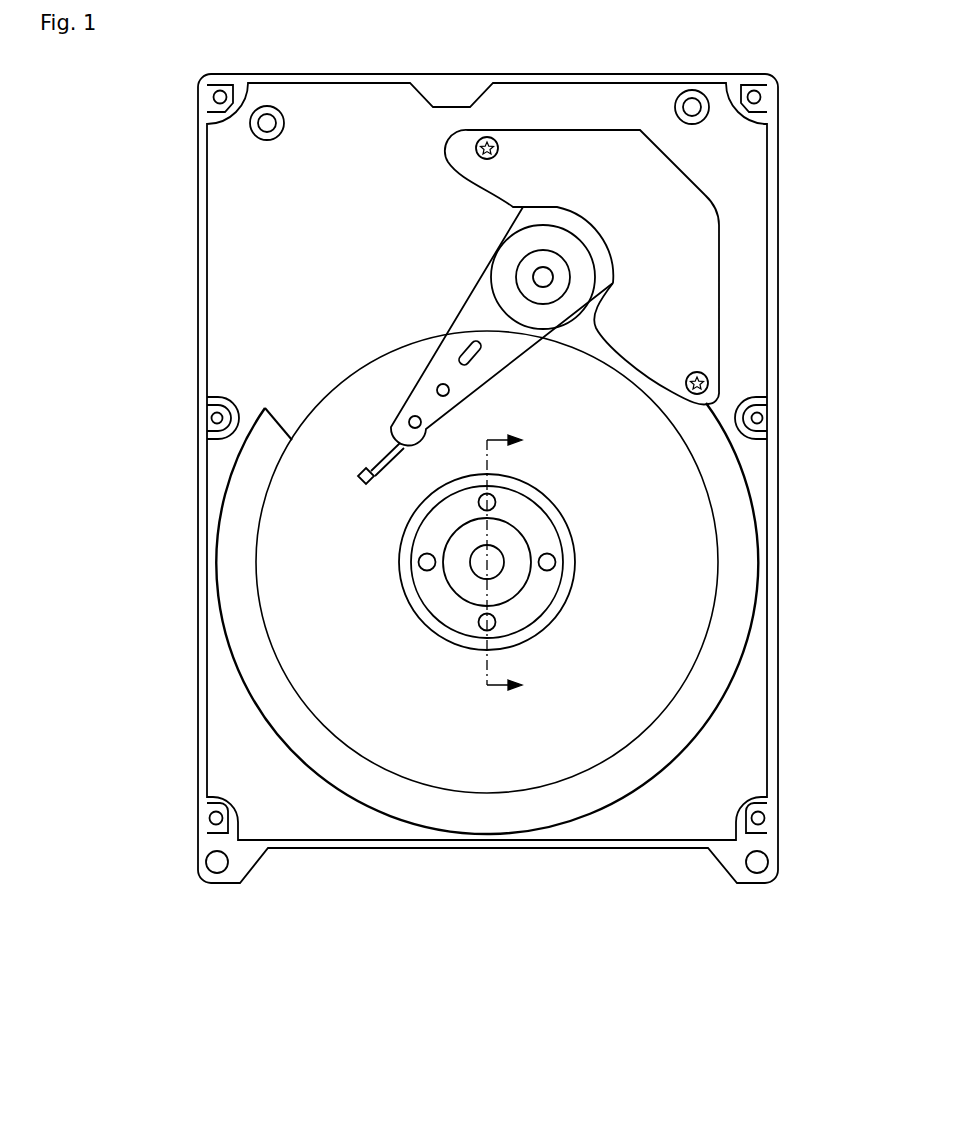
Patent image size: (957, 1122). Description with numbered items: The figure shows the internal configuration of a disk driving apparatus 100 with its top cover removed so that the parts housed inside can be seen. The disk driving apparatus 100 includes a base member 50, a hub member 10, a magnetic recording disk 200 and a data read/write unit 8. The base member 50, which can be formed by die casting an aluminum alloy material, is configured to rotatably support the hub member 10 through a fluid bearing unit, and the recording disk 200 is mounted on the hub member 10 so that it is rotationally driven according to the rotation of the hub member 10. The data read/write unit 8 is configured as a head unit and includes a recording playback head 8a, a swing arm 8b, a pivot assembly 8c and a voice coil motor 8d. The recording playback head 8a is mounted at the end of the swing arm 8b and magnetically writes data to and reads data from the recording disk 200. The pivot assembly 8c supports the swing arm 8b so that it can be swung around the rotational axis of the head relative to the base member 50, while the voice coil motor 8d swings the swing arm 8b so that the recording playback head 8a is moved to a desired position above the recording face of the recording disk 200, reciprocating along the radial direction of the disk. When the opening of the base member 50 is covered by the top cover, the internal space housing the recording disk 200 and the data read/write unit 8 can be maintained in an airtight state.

The data read/write unit 8 is at (122, 165).
The recording playback head 8a is at (361, 468).
The swing arm 8b is at (463, 310).
The pivot assembly 8c is at (513, 255).
The voice coil motor 8d is at (535, 172).
The hub member 10 is at (510, 540).
The base member 50 is at (745, 218).
The disk driving apparatus 100 is at (512, 965).
The magnetic recording disk 200 is at (687, 588).